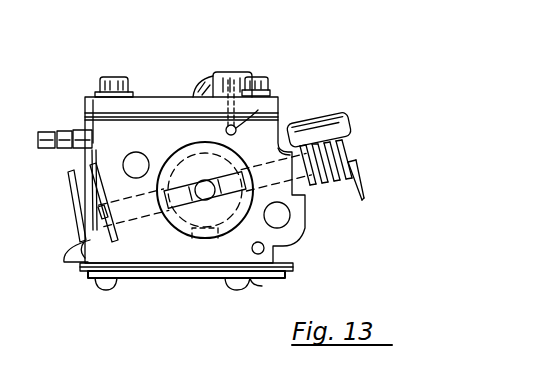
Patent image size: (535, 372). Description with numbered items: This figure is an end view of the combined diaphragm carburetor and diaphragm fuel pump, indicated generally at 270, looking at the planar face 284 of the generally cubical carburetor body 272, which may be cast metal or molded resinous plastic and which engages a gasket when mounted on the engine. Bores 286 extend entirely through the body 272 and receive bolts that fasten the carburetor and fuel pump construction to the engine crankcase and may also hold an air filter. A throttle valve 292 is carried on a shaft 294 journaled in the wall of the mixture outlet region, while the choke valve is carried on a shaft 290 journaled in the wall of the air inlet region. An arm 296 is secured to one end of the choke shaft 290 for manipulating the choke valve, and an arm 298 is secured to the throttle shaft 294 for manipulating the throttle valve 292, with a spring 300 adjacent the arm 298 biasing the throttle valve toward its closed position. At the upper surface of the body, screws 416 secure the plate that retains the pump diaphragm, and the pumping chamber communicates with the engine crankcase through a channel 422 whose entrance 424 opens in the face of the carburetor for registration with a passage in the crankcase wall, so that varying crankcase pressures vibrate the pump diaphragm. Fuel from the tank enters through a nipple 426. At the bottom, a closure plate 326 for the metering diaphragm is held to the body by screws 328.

The carburetor 270 is at (206, 72).
The planar face 284 is at (166, 145).
The bores 286 is at (123, 158).
The throttle valve 292 is at (196, 163).
The screws 416 is at (112, 76).
The channel 422 is at (234, 128).
The entrance 424 is at (352, 118).
The arm 298 is at (344, 114).
The spring 300 is at (350, 152).
The nipple 426 is at (72, 131).
The carburetor body 272 is at (90, 156).
The arm 296 is at (72, 185).
The shaft 290 is at (78, 218).
The shaft 294 is at (78, 244).
The screws 328 is at (106, 291).
The closure plate 326 is at (134, 279).